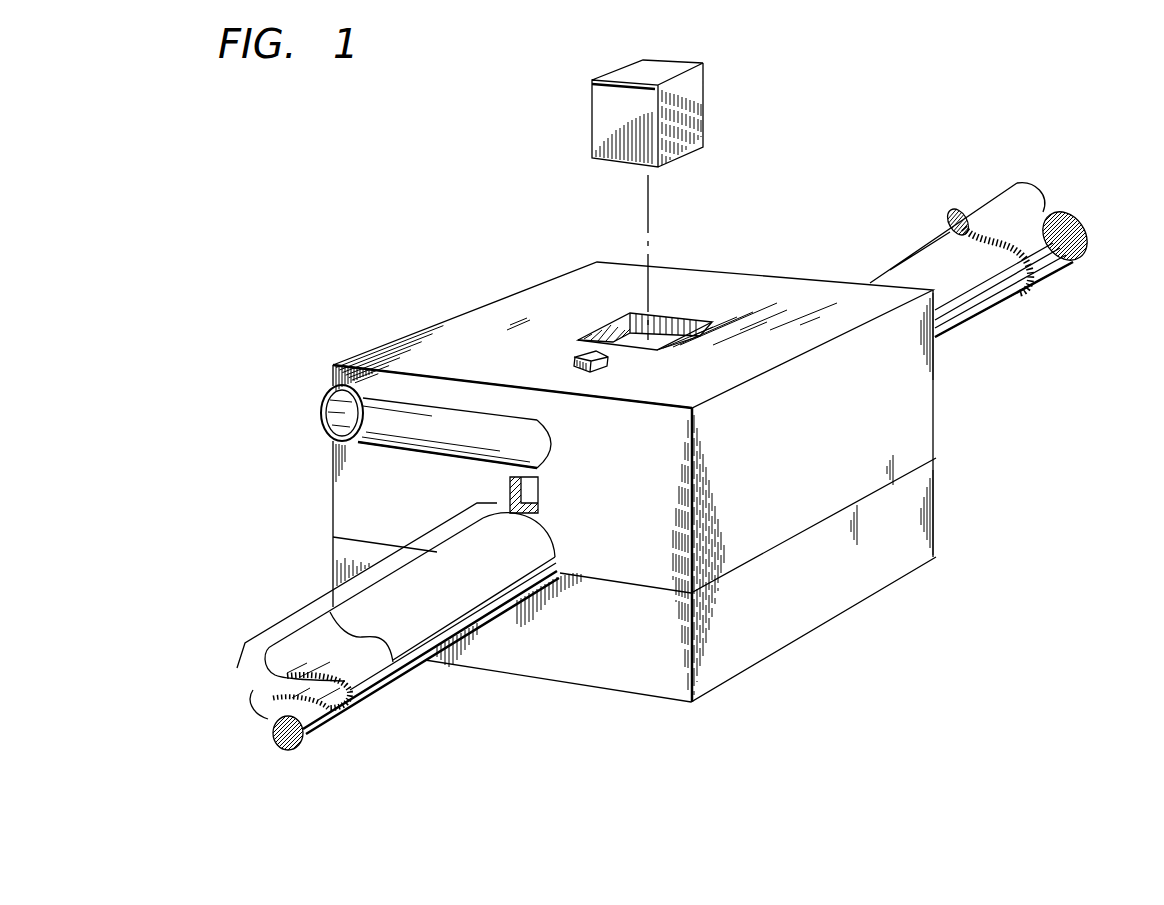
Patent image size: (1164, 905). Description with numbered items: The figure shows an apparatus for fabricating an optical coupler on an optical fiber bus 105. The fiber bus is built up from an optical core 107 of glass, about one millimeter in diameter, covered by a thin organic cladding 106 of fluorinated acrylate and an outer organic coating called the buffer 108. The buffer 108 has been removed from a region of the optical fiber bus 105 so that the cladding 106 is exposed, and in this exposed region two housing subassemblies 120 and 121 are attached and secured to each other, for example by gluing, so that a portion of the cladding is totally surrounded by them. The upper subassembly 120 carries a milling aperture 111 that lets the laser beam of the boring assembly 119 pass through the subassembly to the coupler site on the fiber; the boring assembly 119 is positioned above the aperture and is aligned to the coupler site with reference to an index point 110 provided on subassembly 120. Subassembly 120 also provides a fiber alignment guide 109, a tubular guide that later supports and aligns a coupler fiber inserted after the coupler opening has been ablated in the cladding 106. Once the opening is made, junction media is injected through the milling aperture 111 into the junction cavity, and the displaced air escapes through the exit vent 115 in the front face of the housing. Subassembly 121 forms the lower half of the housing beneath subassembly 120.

The optical fiber bus 105 is at (330, 592).
The cladding 106 is at (357, 715).
The optical core 107 is at (277, 743).
The buffer 108 is at (1027, 290).
The fiber alignment guide 109 is at (333, 395).
The index point 110 is at (573, 353).
The milling aperture 111 is at (687, 320).
The exit vent 115 is at (540, 490).
The boring assembly 119 is at (705, 66).
The subassembly 120 is at (927, 430).
The subassembly 121 is at (905, 573).